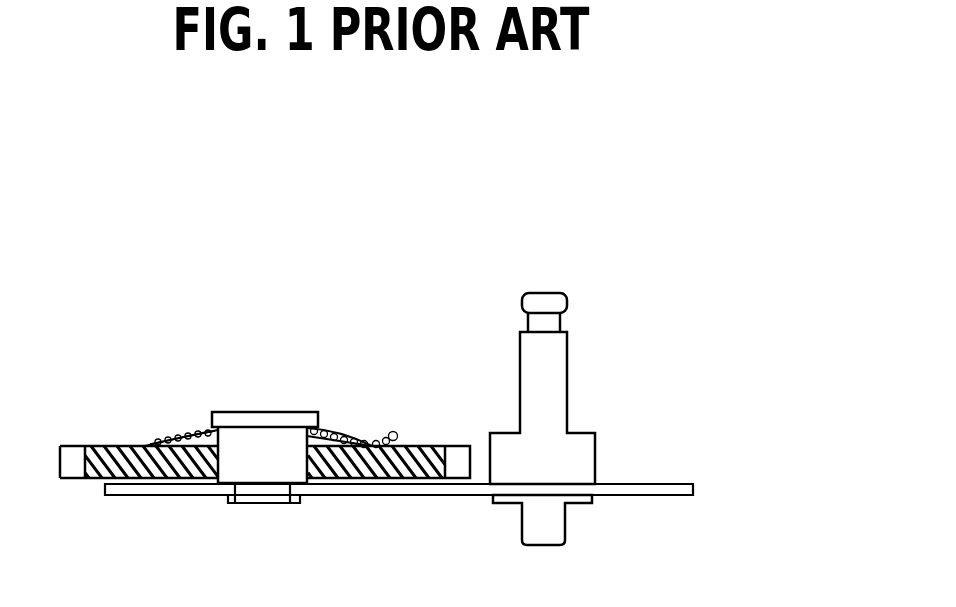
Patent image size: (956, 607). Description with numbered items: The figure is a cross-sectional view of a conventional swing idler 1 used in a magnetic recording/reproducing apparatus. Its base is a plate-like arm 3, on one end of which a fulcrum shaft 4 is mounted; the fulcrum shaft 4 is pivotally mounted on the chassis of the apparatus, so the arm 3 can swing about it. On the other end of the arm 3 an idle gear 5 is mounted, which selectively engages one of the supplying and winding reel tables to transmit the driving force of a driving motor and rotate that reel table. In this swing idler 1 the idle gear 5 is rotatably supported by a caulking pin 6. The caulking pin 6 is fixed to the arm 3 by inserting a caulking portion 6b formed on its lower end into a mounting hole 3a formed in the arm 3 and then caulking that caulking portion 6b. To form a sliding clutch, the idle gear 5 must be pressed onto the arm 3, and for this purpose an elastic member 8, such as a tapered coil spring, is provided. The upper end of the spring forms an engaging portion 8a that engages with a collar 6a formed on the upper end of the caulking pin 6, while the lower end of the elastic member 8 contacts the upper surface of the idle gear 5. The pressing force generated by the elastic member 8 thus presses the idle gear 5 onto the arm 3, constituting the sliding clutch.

The swing idler 1 is at (305, 241).
The arm 3 is at (633, 495).
The mounting hole 3a is at (240, 502).
The fulcrum shaft 4 is at (568, 360).
The idle gear 5 is at (95, 447).
The caulking pin 6 is at (290, 410).
The collar 6a is at (318, 417).
The caulking portion 6b is at (285, 503).
The elastic member 8 is at (178, 440).
The engaging portion 8a is at (198, 427).